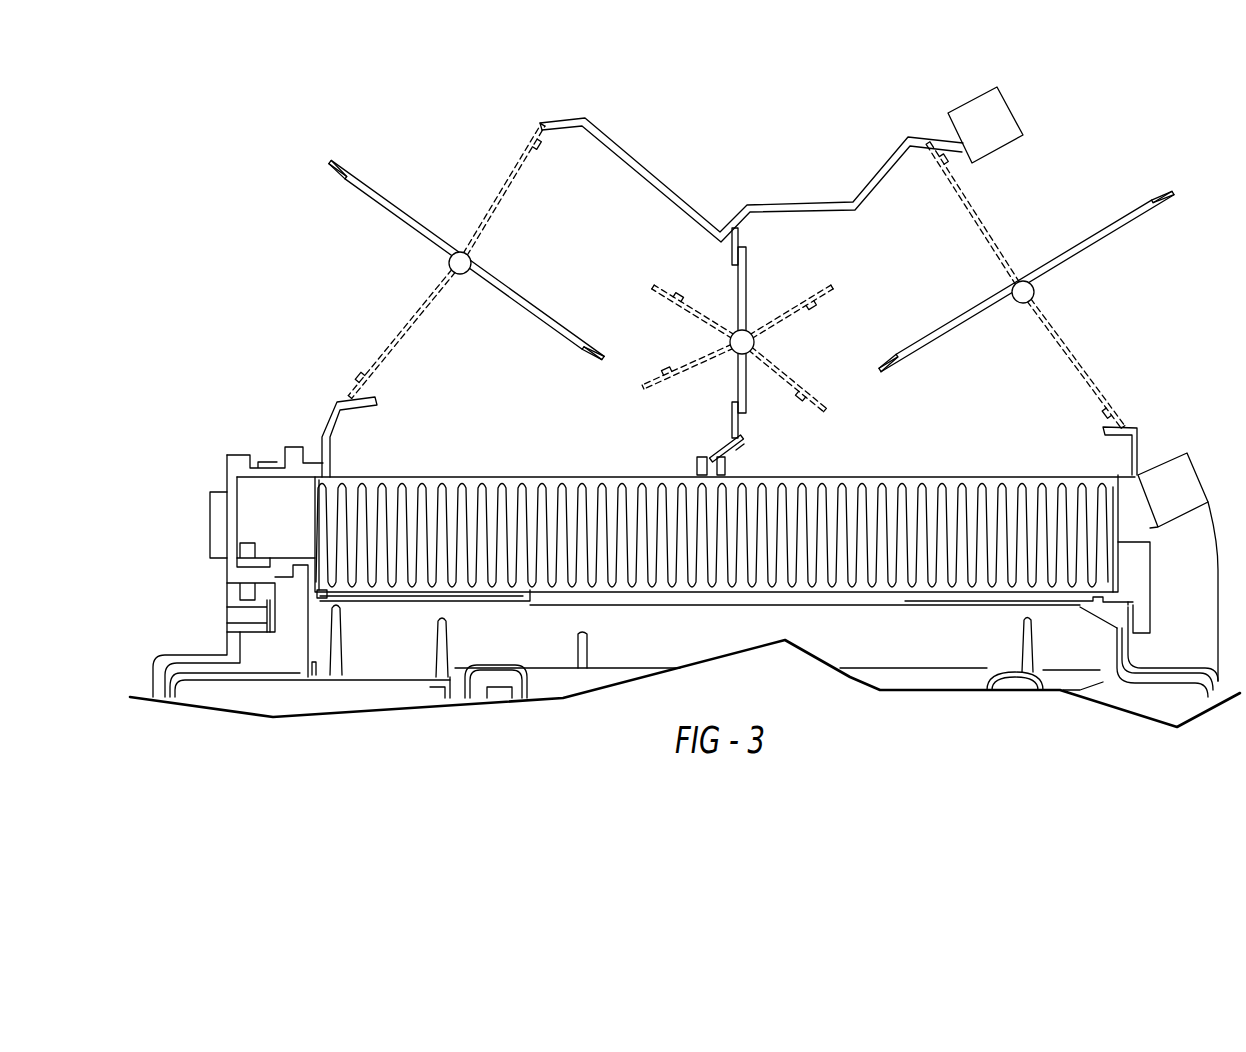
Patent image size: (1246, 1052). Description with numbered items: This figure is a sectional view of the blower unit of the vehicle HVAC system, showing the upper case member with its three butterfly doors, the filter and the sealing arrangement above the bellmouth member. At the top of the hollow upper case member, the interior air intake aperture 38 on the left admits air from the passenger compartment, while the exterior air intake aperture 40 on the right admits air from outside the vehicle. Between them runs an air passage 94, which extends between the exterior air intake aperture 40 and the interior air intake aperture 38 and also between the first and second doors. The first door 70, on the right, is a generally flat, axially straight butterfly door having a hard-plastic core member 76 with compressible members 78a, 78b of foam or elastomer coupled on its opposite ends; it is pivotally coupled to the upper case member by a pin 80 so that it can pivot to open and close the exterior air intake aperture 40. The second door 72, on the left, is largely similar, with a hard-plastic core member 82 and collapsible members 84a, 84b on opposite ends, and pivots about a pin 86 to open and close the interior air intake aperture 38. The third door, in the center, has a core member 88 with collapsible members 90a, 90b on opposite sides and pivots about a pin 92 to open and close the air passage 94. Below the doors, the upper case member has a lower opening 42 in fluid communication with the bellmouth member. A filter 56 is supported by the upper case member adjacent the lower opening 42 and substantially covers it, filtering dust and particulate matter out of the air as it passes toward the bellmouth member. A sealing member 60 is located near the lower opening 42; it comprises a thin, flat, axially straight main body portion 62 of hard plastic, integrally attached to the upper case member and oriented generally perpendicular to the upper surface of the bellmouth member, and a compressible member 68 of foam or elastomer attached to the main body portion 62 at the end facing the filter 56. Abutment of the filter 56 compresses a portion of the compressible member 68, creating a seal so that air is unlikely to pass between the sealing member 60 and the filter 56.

The interior air intake aperture 38 is at (286, 145).
The exterior air intake aperture 40 is at (1208, 103).
The lower opening 42 is at (512, 443).
The filter 56 is at (925, 525).
The sealing member 60 is at (750, 452).
The main body portion 62 is at (727, 443).
The compressible member 68 is at (695, 462).
The first door 70 is at (1165, 274).
The second door 72 is at (488, 122).
The core member 76 is at (1070, 270).
The compressible member 78a is at (1158, 193).
The compressible member 78b is at (890, 372).
The pin 80 is at (1027, 281).
The core member 82 is at (417, 242).
The collapsible member 84a is at (350, 173).
The collapsible member 84b is at (592, 357).
The pin 86 is at (472, 263).
The core member 88 is at (745, 290).
The collapsible member 90a is at (730, 248).
The collapsible member 90b is at (730, 413).
The pin 92 is at (755, 343).
The air passage 94 is at (697, 338).